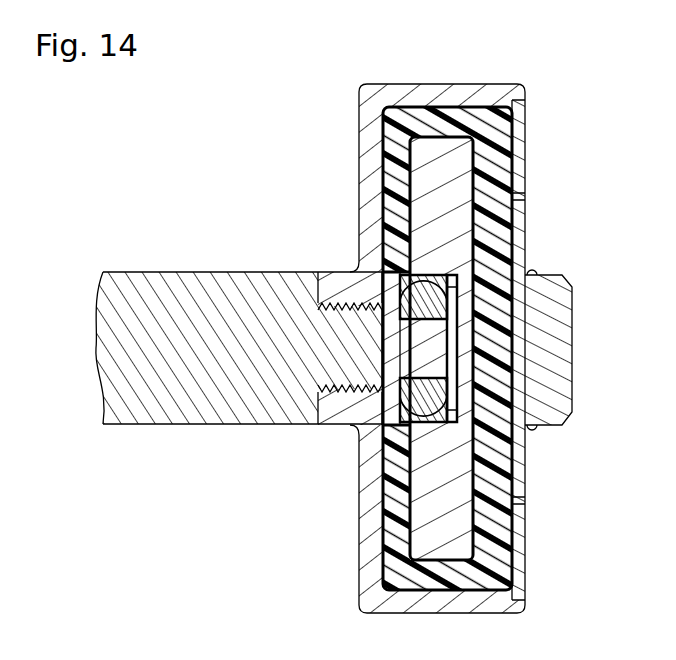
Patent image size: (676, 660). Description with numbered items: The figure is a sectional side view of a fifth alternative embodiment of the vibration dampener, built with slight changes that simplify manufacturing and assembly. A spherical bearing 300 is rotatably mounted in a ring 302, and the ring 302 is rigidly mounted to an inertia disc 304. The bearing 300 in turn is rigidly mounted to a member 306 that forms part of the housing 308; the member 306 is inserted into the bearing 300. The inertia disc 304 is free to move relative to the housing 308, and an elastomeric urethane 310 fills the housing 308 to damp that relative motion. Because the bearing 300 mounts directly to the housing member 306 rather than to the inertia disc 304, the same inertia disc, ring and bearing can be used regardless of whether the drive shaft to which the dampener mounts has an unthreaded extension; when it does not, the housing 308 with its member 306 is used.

The spherical bearing 300 is at (392, 290).
The ring 302 is at (404, 280).
The inertia disc 304 is at (422, 137).
The member 306 is at (417, 352).
The housing 308 is at (497, 88).
The elastomeric urethane 310 is at (503, 175).